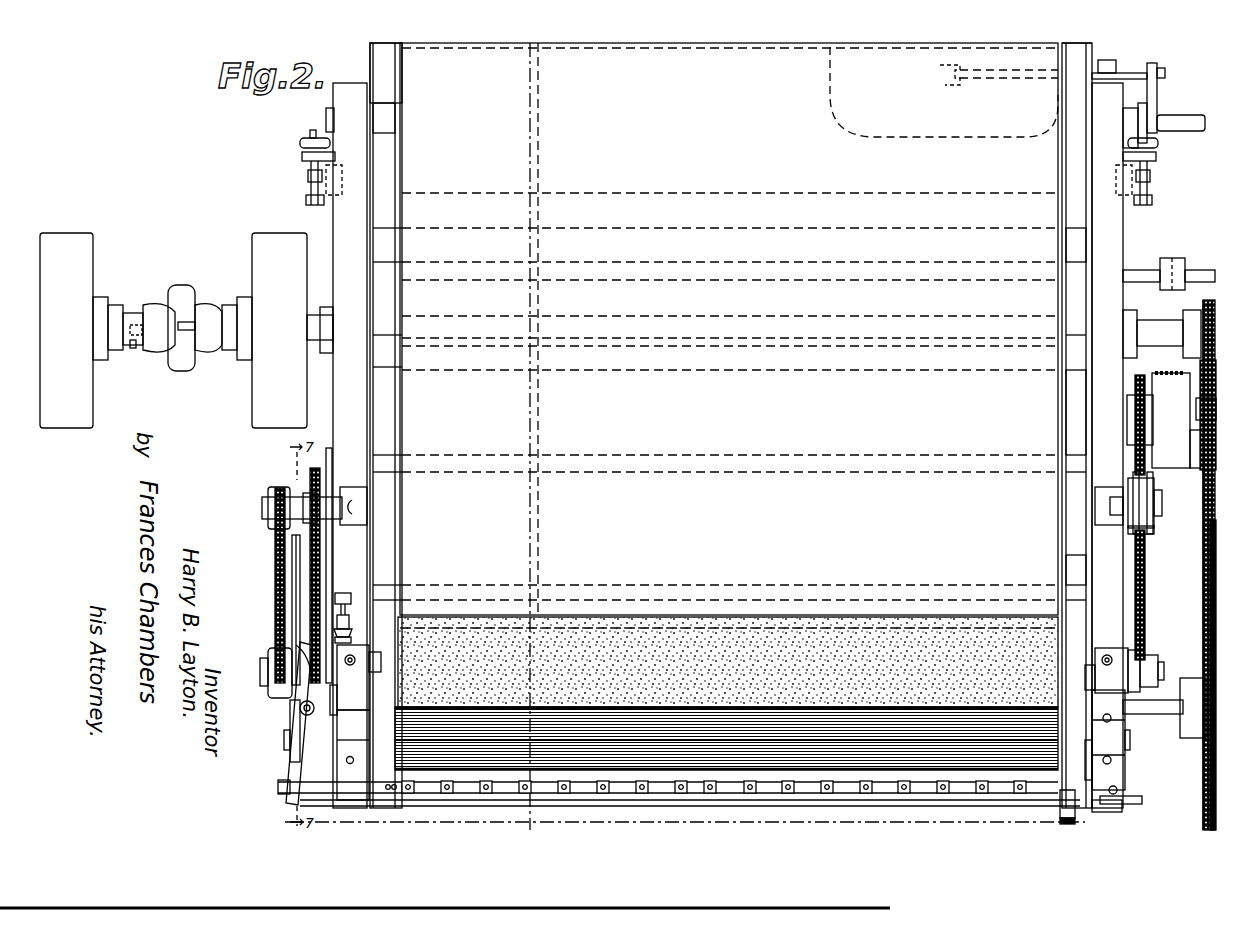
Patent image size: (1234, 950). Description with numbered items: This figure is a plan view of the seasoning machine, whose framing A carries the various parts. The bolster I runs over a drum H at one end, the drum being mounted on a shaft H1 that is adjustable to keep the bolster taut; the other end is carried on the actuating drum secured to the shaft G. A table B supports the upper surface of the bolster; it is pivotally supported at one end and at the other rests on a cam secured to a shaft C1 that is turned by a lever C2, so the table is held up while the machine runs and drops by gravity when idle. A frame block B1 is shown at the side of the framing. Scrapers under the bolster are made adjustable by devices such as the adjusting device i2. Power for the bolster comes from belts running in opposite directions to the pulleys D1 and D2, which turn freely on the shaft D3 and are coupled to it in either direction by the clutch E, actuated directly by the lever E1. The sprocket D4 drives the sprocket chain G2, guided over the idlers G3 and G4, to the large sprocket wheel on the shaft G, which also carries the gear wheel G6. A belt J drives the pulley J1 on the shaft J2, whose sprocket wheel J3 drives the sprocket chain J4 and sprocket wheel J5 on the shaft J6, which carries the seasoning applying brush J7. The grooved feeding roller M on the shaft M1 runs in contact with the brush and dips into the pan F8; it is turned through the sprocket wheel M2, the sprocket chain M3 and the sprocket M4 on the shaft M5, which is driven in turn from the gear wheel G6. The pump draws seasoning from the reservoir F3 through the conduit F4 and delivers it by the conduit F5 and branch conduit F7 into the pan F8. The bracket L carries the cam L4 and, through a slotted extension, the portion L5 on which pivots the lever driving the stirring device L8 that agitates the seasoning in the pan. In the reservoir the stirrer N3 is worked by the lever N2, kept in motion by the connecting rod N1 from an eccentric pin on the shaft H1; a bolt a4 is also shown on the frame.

The bolster I is at (729, 436).
The framing A is at (350, 445).
The table B is at (386, 425).
The frame block B1 is at (1074, 425).
The drum H is at (393, 72).
The shaft H1 is at (326, 118).
The adjusting device i2 is at (306, 175).
The reservoir F3 is at (832, 127).
The conduit F4 is at (1180, 127).
The conduit F5 is at (1088, 47).
The branch conduit F7 is at (1100, 815).
The pan F8 is at (950, 808).
The connecting rod N1 is at (1150, 95).
The lever N2 is at (1128, 70).
The stirrer N3 is at (955, 80).
The shaft C1 is at (1137, 268).
The lever C2 is at (1190, 270).
The pulley D1 is at (285, 330).
The pulley D2 is at (74, 330).
The shaft D3 is at (1162, 334).
The sprocket D4 is at (1191, 558).
The clutch E is at (156, 312).
The lever E1 is at (185, 300).
The shaft G is at (1158, 706).
The sprocket chain G2 is at (1205, 600).
The idler G3 is at (1195, 507).
The idler G4 is at (1205, 393).
The gear wheel G6 is at (1205, 566).
The belt J is at (1158, 485).
The pulley J1 is at (1177, 420).
The shaft J2 is at (1197, 402).
The sprocket wheel J3 is at (1140, 375).
The sprocket chain J4 is at (1150, 525).
The sprocket wheel J5 is at (1152, 655).
The shaft J6 is at (1160, 670).
The seasoning applying brush J7 is at (490, 626).
The bracket L is at (292, 770).
The cam L4 is at (280, 685).
The portion L5 is at (298, 710).
The stirring device L8 is at (577, 790).
The grooved feeding roller M is at (890, 755).
The shaft M1 is at (1096, 742).
The sprocket wheel M2 is at (290, 742).
The sprocket chain M3 is at (275, 620).
The sprocket M4 is at (278, 556).
The shaft M5 is at (293, 582).
The bolt a4 is at (345, 592).